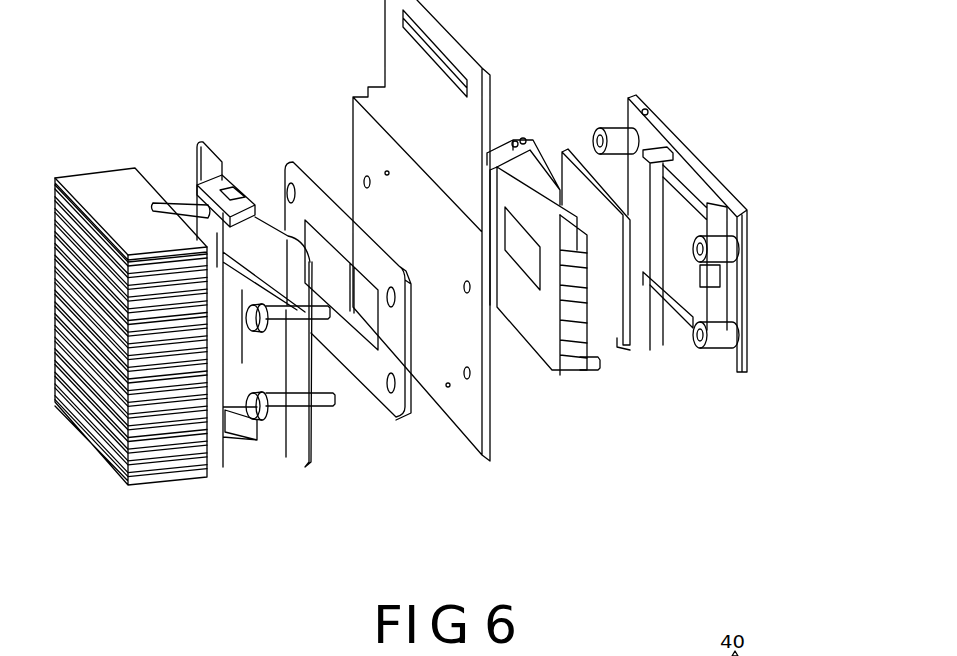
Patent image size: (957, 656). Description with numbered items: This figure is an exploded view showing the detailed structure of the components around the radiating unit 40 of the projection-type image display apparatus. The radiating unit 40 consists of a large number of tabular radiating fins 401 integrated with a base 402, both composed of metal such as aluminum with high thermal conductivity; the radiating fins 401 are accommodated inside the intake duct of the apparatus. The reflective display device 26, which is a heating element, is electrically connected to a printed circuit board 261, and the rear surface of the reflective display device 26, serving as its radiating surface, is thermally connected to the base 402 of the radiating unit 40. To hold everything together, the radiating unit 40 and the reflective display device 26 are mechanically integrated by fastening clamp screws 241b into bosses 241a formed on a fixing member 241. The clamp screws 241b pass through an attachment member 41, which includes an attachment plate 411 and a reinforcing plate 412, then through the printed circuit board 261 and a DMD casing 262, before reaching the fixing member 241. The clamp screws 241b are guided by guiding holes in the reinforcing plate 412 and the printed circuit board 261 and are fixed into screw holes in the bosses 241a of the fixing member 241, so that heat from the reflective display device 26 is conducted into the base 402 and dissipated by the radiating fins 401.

The radiating unit 40 is at (291, 569).
The radiating fins 401 is at (167, 474).
The base 402 is at (227, 372).
The attachment member 41 is at (452, 537).
The attachment plate 411 is at (313, 463).
The reinforcing plate 412 is at (400, 418).
The clamp screws 241b is at (331, 401).
The printed circuit board 261 is at (494, 428).
The DMD casing 262 is at (570, 373).
The reflective display device 26 is at (612, 333).
The bosses 241a is at (725, 340).
The fixing member 241 is at (743, 353).